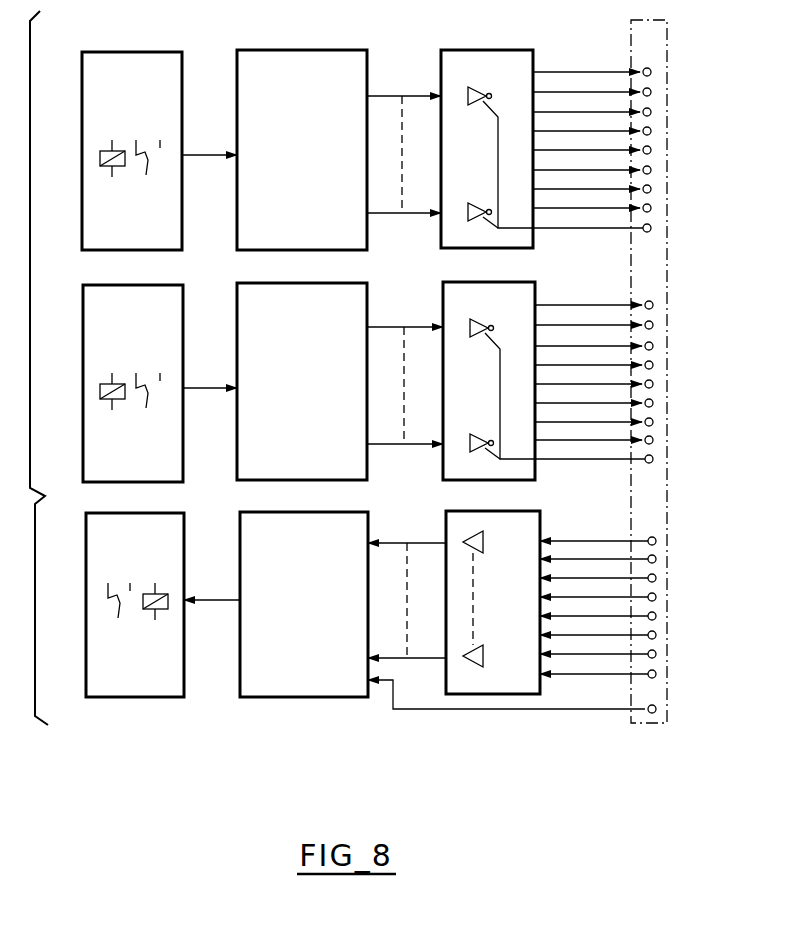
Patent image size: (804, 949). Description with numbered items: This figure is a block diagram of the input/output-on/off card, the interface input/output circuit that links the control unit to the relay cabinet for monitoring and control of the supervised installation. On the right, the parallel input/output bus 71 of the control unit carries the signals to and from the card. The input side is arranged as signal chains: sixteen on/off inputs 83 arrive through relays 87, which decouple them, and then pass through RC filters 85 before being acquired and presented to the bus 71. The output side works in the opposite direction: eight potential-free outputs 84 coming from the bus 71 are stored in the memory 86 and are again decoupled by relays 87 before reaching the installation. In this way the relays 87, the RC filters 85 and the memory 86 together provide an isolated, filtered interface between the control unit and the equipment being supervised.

The parallel input/output bus 71 is at (672, 2).
The on/off inputs 83 is at (488, 265).
The potential-free outputs 84 is at (493, 602).
The RC filters 85 is at (302, 265).
The memory 86 is at (304, 604).
The relays 87 is at (133, 374).